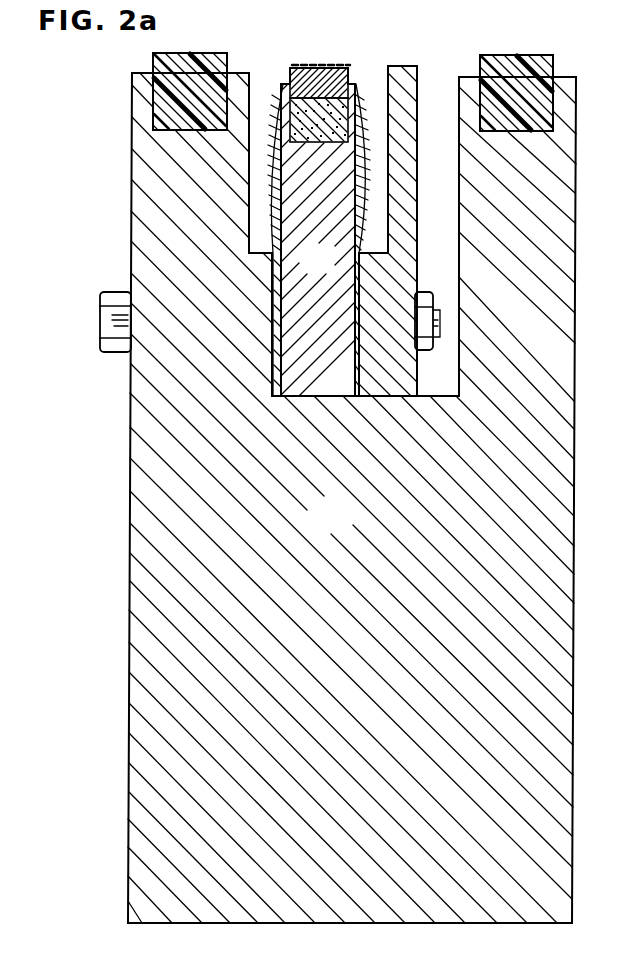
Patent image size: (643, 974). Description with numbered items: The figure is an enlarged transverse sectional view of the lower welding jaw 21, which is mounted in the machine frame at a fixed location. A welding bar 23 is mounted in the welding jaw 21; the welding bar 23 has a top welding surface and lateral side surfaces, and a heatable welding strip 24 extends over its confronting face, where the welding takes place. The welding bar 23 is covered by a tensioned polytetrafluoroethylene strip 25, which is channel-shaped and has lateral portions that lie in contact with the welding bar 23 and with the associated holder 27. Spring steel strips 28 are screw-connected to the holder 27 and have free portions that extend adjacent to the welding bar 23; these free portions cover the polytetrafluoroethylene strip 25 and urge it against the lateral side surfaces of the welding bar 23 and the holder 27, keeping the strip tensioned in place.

The welding jaw 21 is at (345, 527).
The welding bar 23 is at (299, 66).
The heatable welding strip 24 is at (326, 65).
The polytetrafluoroethylene strip 25 is at (357, 67).
The holder 27 is at (331, 271).
The spring steel strip 28 is at (272, 177).